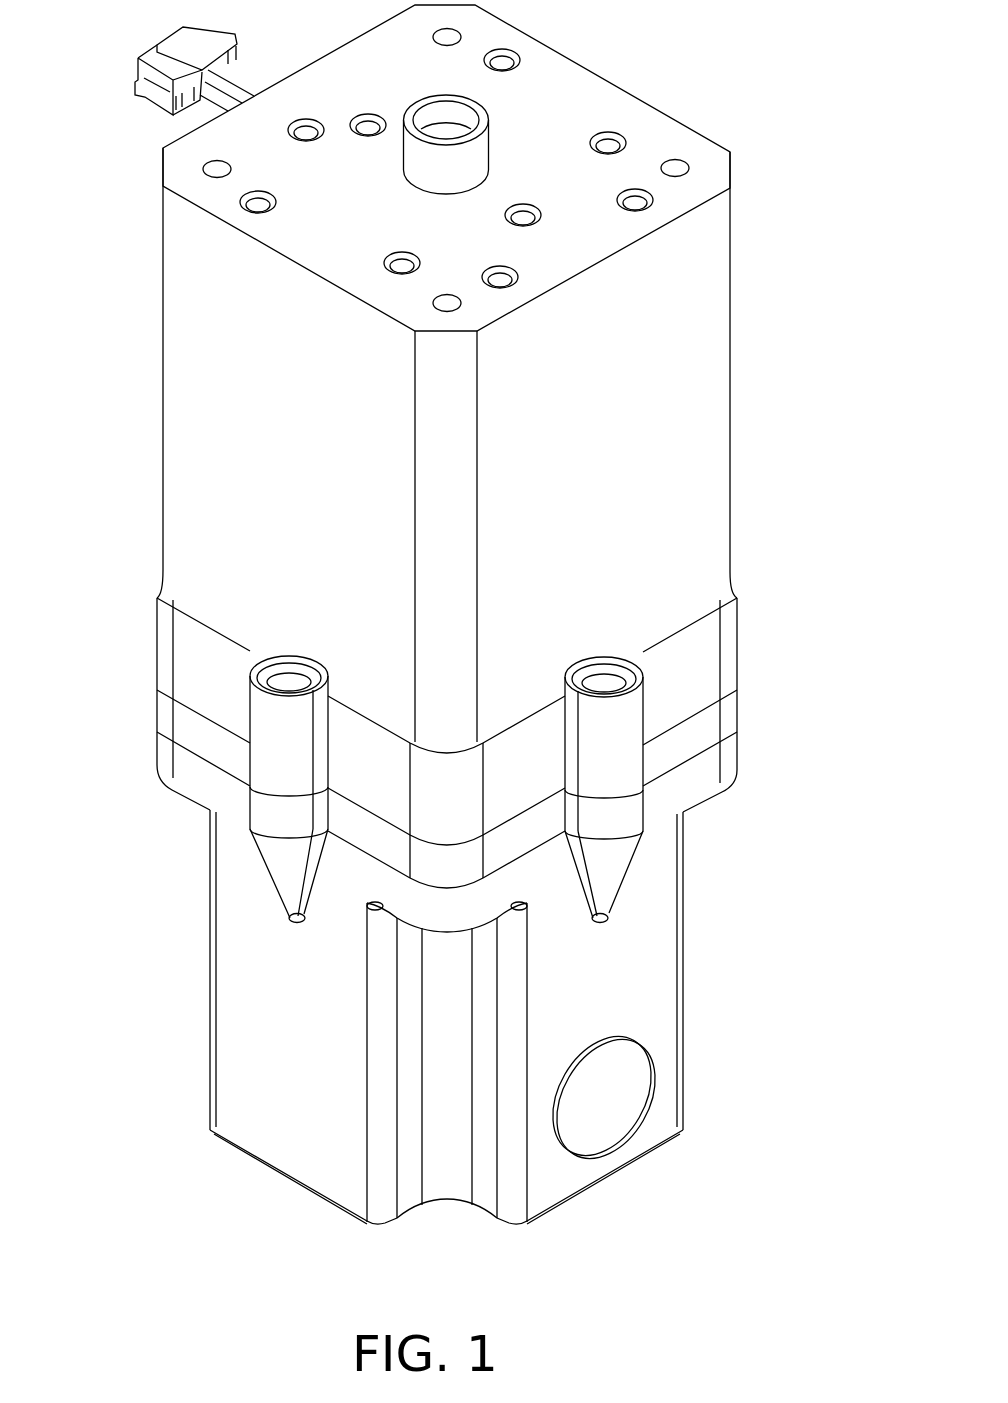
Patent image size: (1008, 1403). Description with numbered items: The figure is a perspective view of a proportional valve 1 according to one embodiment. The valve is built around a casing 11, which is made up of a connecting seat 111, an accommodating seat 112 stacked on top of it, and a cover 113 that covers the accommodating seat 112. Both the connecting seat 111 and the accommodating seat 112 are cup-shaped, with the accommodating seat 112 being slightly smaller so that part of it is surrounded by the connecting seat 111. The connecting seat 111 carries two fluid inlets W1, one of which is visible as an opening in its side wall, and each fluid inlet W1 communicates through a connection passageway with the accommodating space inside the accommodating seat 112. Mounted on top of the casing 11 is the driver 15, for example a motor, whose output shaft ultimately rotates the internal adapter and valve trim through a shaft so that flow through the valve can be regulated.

The proportional valve 1 is at (55, 23).
The driver 15 is at (713, 281).
The casing 11 is at (838, 747).
The cover 113 is at (707, 662).
The accommodating seat 112 is at (703, 737).
The connecting seat 111 is at (663, 962).
The fluid inlet W1 is at (579, 1104).